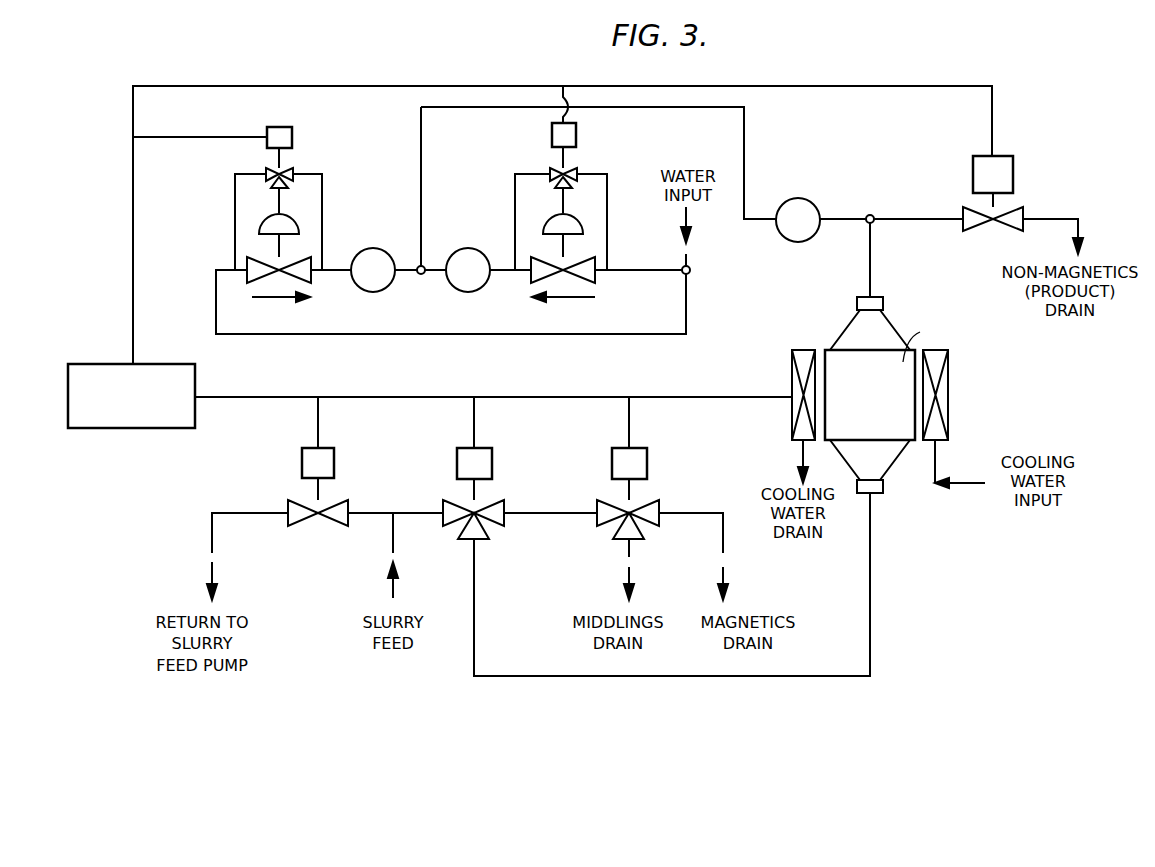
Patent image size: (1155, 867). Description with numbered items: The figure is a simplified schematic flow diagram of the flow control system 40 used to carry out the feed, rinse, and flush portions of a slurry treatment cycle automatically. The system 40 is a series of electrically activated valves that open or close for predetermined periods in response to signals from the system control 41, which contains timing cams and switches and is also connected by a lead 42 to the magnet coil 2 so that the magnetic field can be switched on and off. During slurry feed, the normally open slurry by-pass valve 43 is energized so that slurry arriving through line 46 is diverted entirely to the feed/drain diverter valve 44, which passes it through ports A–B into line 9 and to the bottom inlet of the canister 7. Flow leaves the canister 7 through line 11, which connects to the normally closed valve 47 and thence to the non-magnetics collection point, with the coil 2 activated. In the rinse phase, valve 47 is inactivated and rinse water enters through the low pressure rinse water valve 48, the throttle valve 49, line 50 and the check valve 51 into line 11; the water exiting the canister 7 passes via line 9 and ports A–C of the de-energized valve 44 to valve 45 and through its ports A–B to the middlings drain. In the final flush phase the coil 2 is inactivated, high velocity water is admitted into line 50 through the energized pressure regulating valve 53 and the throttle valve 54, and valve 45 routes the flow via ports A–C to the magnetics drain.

The magnet coil 2 is at (803, 348).
The canister 7 is at (908, 445).
The line 9 is at (870, 614).
The line 11 is at (870, 277).
The system 40 is at (915, 524).
The system control 41 is at (121, 430).
The lead 42 is at (510, 397).
The slurry by-pass valve 43 is at (299, 500).
The feed/drain diverter valve 44 is at (455, 500).
The valve 45 is at (612, 500).
The line 46 is at (393, 525).
The valve 47 is at (972, 210).
The low pressure rinse water valve 48 is at (284, 168).
The throttle valve 49 is at (366, 290).
The line 50 is at (421, 182).
The check valve 51 is at (799, 198).
The pressure regulating valve 53 is at (556, 168).
The throttle valve 54 is at (473, 292).